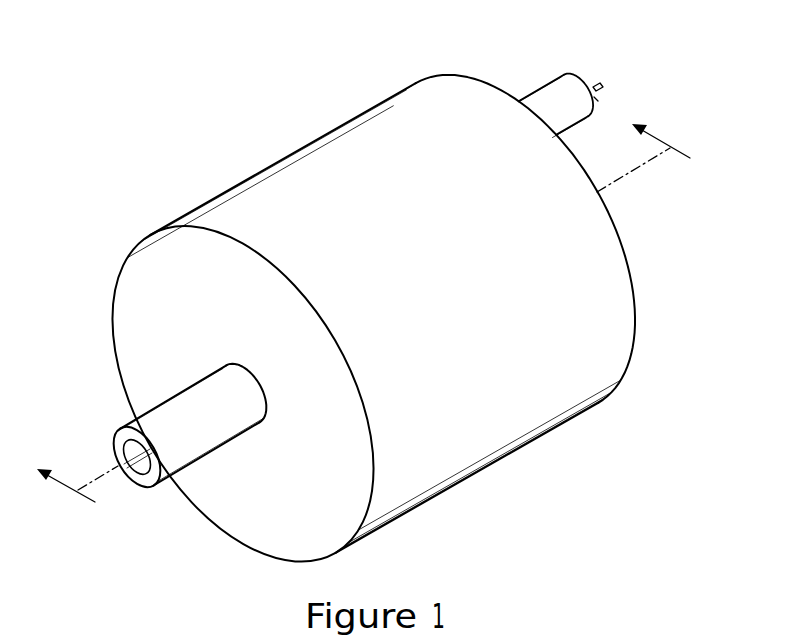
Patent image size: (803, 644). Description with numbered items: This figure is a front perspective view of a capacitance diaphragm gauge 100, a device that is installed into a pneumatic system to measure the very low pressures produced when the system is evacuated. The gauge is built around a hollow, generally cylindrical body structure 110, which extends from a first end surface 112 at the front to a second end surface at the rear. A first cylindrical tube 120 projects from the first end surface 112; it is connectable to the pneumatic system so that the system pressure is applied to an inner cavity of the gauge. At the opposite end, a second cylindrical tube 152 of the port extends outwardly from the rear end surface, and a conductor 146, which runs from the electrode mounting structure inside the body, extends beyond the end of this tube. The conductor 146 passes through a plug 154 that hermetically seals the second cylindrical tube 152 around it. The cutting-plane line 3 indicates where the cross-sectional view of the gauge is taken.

The capacitance diaphragm gauge 100 is at (383, 309).
The cylindrical body structure 110 is at (317, 173).
The first end surface 112 is at (145, 297).
The first cylindrical tube 120 is at (137, 417).
The second cylindrical tube 152 is at (568, 100).
The conductor 146 is at (595, 87).
The plug 154 is at (598, 102).
The section line 3- 3 is at (353, 301).